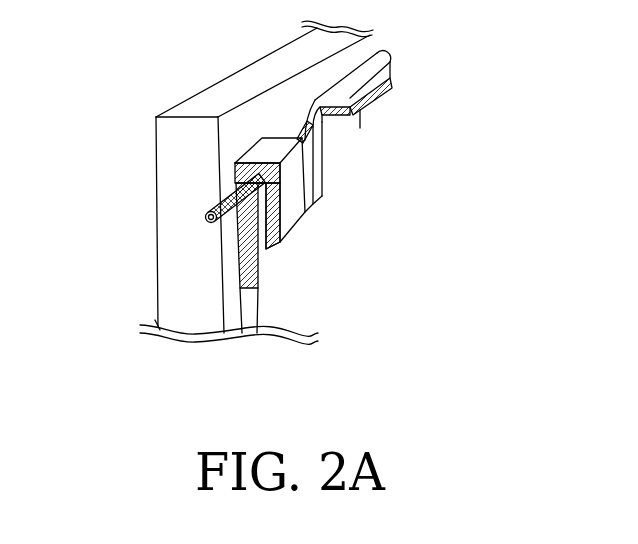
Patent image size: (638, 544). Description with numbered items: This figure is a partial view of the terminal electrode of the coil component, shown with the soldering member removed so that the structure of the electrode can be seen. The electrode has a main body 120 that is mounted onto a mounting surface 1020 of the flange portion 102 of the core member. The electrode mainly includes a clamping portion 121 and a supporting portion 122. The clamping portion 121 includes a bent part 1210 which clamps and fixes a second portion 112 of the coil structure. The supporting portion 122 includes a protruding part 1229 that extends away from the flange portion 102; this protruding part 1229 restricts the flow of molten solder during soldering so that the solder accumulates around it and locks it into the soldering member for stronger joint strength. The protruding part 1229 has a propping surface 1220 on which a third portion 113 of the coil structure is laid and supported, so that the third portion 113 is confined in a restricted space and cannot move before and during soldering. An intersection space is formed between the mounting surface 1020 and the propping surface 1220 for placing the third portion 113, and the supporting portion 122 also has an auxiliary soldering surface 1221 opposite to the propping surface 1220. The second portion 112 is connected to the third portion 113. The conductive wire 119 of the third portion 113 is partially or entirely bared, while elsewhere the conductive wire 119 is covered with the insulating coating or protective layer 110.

The flange portion 102 is at (170, 283).
The mounting surface 1020 is at (252, 118).
The insulating coating 110 is at (207, 217).
The conductive wire 119 is at (204, 222).
The second portion 112 is at (247, 203).
The third portion 113 is at (310, 108).
The main body 120 is at (297, 312).
The clamping portion 121 is at (294, 201).
The bent part 1210 is at (240, 170).
The supporting portion 122 is at (389, 81).
The propping surface 1220 is at (390, 62).
The auxiliary soldering surface 1221 is at (383, 100).
The protruding part 1229 is at (373, 117).